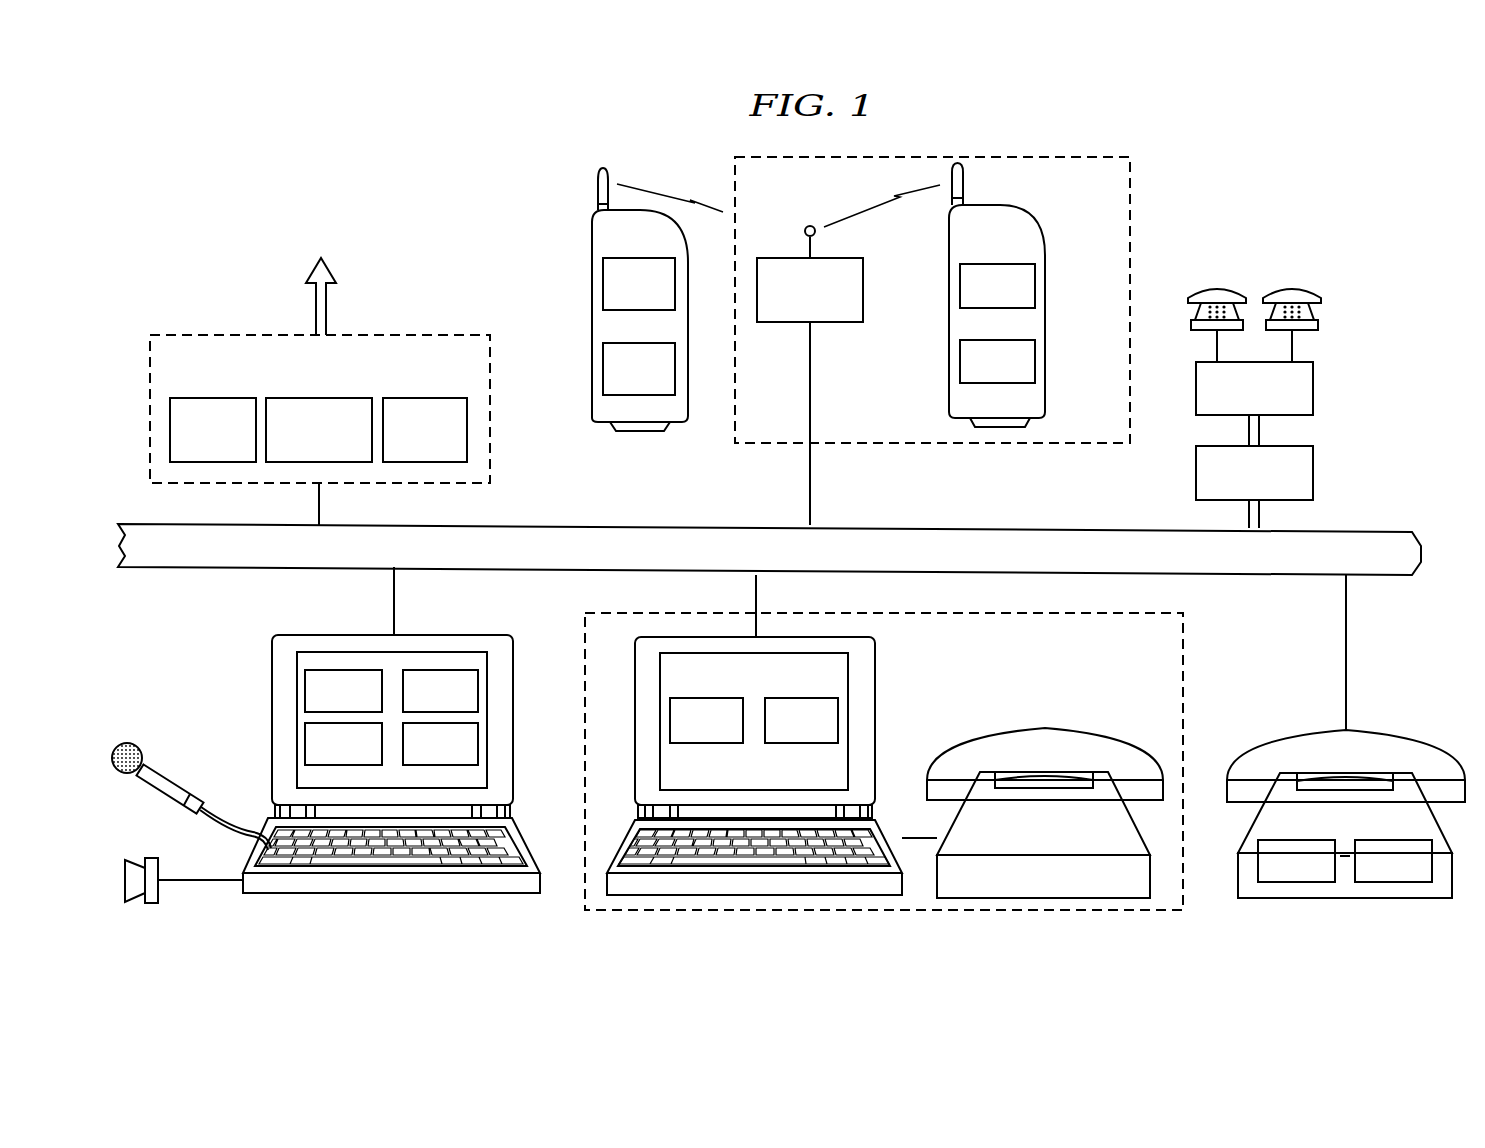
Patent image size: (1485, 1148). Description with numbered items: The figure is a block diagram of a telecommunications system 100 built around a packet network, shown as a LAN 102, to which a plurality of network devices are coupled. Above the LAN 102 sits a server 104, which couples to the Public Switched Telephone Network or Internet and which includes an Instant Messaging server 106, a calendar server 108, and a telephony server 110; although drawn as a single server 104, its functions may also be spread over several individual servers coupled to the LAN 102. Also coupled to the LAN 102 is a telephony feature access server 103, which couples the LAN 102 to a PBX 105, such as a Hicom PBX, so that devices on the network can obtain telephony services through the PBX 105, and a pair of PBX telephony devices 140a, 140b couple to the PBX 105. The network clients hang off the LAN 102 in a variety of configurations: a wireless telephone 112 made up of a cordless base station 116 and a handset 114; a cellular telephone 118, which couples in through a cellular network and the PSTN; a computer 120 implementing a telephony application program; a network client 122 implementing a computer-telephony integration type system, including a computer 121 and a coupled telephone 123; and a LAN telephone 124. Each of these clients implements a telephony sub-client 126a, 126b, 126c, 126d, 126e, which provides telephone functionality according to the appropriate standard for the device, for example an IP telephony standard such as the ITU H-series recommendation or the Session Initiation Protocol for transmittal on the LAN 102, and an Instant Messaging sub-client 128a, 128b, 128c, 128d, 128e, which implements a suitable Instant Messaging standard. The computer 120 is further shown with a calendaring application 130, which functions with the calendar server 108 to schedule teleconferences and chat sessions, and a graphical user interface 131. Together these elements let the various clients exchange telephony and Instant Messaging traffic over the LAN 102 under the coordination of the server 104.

The telecommunications system 100 is at (438, 163).
The LAN 102 is at (693, 527).
The telephony feature access server 103 is at (1234, 485).
The server 104 is at (232, 335).
The PBX 105 is at (1315, 390).
The Instant Messaging server 106 is at (213, 398).
The calendar server 108 is at (319, 398).
The telephony server 110 is at (424, 398).
The wireless telephone 112 is at (1004, 157).
The handset 114 is at (1047, 315).
The cordless base station 116 is at (863, 294).
The cellular telephone 118 is at (592, 322).
The computer 120 is at (272, 710).
The computer 121 is at (877, 712).
The network client 122 is at (1185, 726).
The telephone 123 is at (1090, 733).
The LAN telephone 124 is at (1392, 733).
The telephony sub-client 126a is at (318, 704).
The telephony sub-client 126b is at (681, 734).
The telephony sub-client 126c is at (1271, 874).
The telephony sub-client 126d is at (1025, 299).
The telephony sub-client 126e is at (612, 296).
The Instant Messaging sub-client 128a is at (415, 704).
The Instant Messaging sub-client 128b is at (776, 734).
The Instant Messaging sub-client 128c is at (1368, 874).
The Instant Messaging sub-client 128d is at (1025, 374).
The Instant Messaging sub-client 128e is at (612, 381).
The calendaring application 130 is at (323, 757).
The graphical user interface 131 is at (420, 757).
The PBX telephony device 140a is at (1212, 288).
The PBX telephony device 140b is at (1290, 288).